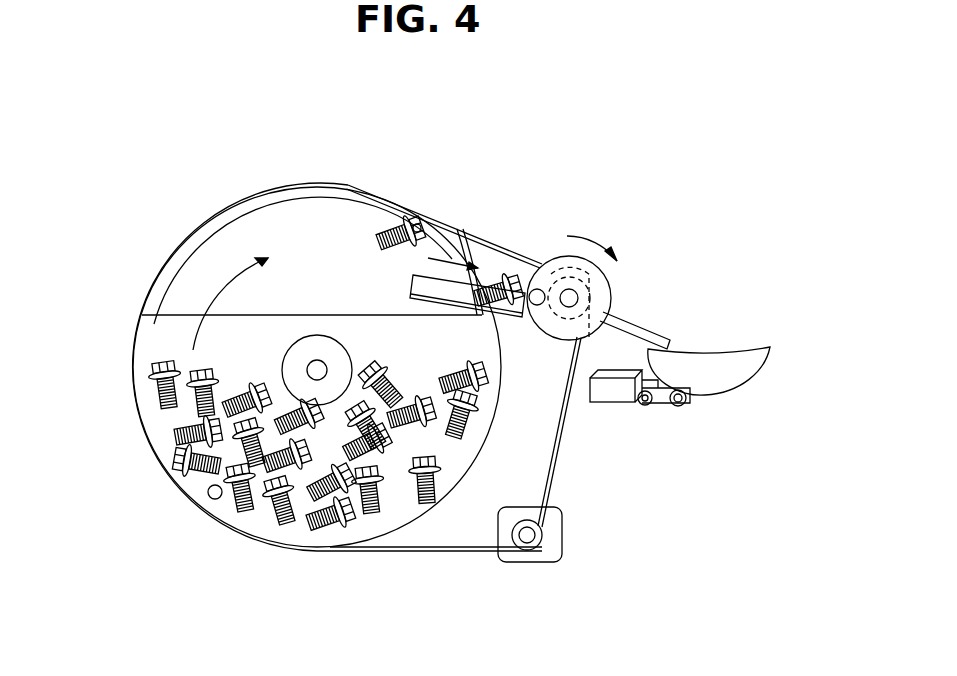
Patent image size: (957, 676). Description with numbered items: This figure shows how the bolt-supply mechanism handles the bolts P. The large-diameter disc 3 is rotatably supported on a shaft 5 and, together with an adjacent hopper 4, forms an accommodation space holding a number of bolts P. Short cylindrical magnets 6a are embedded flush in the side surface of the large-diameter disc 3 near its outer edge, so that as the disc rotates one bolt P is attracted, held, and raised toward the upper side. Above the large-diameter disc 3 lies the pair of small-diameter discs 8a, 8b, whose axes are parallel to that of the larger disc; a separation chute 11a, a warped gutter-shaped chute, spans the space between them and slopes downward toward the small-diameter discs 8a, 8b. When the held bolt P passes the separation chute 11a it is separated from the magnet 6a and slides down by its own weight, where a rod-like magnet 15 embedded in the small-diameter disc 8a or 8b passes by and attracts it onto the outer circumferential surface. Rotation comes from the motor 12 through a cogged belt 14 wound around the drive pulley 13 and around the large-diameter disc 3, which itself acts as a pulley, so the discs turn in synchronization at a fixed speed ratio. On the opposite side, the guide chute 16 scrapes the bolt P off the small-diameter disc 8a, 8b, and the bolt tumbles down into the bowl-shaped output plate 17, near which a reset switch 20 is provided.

The large-diameter disc 3 is at (305, 212).
The hopper 4 is at (167, 338).
The shaft 5 is at (327, 364).
The magnet 6a is at (414, 225).
The small-diameter disc 8a is at (607, 283).
The small-diameter disc 8b is at (626, 288).
The separation chute 11a is at (442, 290).
The motor 12 is at (543, 563).
The drive pulley 13 is at (527, 553).
The cogged belt 14 is at (412, 553).
The magnet 15 is at (539, 266).
The guide chute 16 is at (637, 330).
The output plate 17 is at (740, 368).
The reset switch 20 is at (612, 390).
The bolt P is at (378, 232).